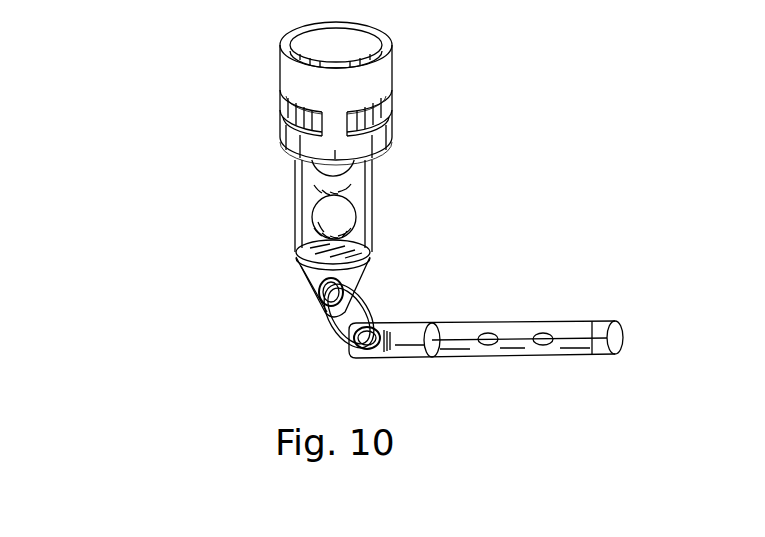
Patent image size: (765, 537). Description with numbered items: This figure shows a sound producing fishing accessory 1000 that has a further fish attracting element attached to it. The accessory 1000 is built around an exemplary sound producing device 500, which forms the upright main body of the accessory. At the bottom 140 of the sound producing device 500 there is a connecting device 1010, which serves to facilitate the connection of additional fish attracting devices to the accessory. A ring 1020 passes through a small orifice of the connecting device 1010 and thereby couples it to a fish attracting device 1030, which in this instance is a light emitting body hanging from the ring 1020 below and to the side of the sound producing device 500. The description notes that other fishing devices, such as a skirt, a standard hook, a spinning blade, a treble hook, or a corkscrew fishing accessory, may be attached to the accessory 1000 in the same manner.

The sound producing fishing accessory 1000 is at (242, 90).
The sound producing device 500 is at (407, 151).
The bottom 140 is at (370, 254).
The connecting device 1010 is at (315, 284).
The ring 1020 is at (347, 342).
The fish attracting device 1030 is at (503, 322).